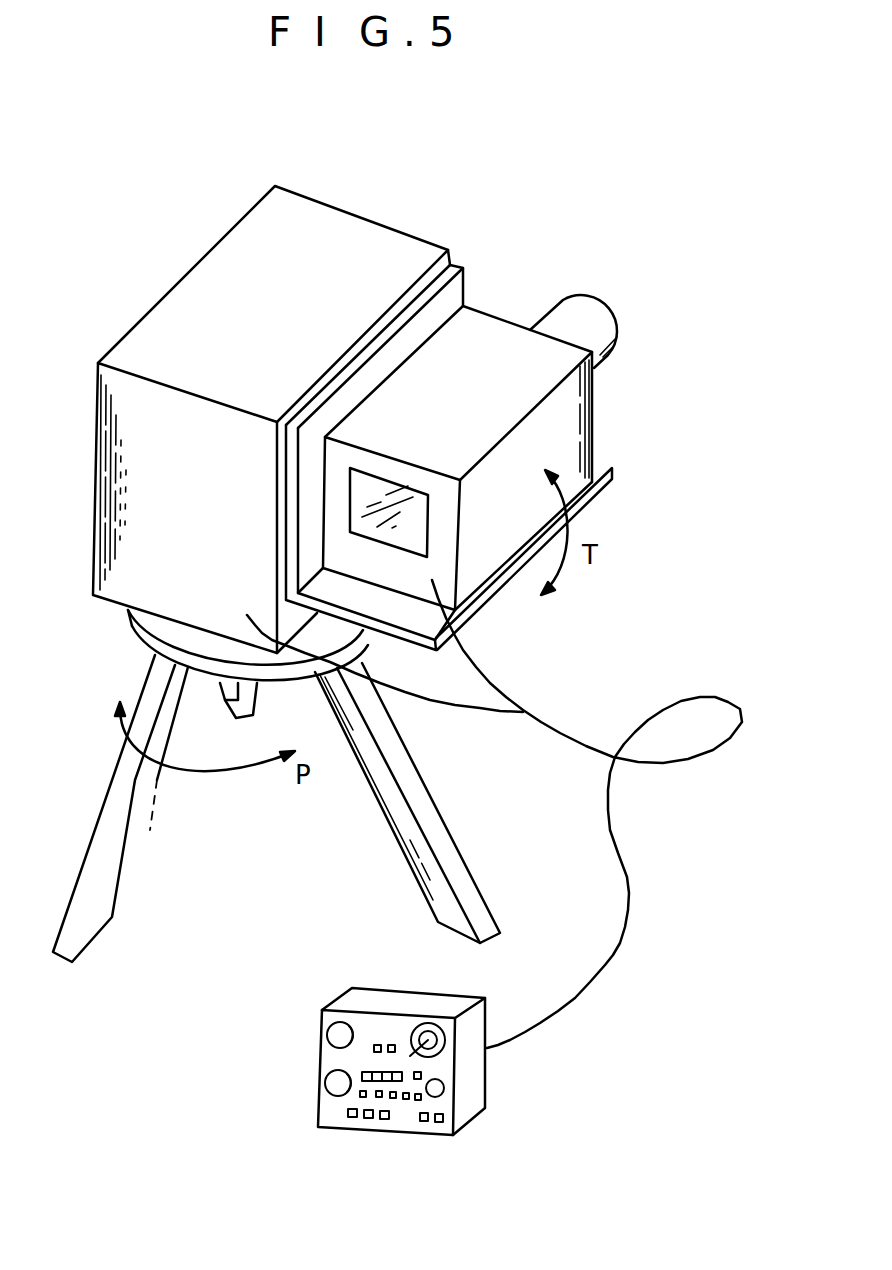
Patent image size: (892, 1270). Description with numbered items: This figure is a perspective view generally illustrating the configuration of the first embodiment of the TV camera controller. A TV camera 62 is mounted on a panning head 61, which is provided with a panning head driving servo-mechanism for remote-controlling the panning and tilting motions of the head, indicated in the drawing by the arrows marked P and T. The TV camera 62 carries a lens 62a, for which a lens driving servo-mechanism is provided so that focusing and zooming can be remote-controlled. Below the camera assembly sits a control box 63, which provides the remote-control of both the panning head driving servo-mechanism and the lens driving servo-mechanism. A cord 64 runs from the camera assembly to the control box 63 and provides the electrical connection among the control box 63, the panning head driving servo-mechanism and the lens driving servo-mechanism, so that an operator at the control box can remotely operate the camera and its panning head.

The panning head 61 is at (163, 603).
The TV camera 62 is at (588, 443).
The lens 62a is at (612, 332).
The control box 63 is at (316, 1083).
The cord 64 is at (630, 918).